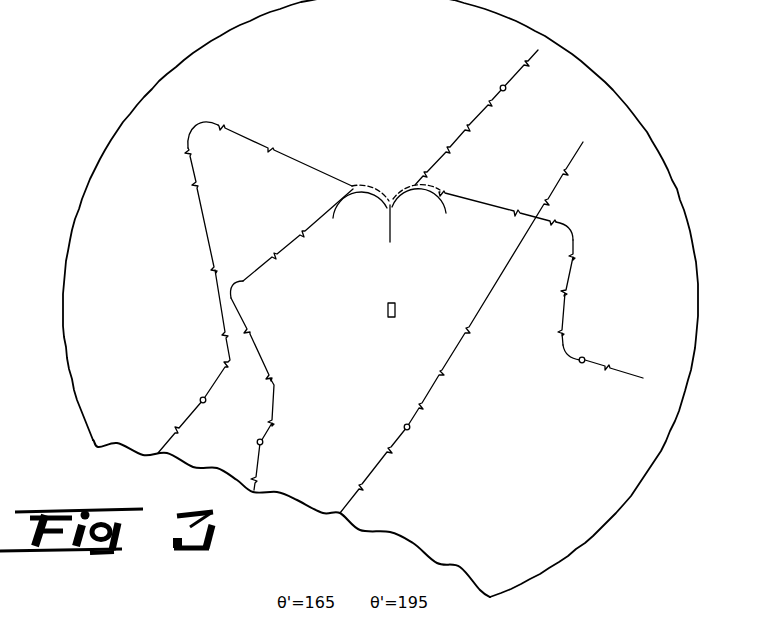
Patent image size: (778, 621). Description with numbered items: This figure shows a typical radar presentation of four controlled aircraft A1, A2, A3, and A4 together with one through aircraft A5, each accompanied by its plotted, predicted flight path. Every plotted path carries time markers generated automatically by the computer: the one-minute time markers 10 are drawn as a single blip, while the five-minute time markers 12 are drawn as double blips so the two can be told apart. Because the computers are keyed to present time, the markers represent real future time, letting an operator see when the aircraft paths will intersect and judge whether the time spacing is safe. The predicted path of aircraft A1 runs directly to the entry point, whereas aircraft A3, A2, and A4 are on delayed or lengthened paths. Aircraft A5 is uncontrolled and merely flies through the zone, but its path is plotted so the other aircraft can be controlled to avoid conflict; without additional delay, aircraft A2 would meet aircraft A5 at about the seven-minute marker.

The one-minute time marker 10 is at (253, 333).
The five-minute time marker 12 is at (301, 228).
The controlled aircraft A1 is at (506, 88).
The controlled aircraft A2 is at (585, 357).
The controlled aircraft A3 is at (264, 442).
The controlled aircraft A4 is at (200, 400).
The through aircraft A5 is at (411, 427).